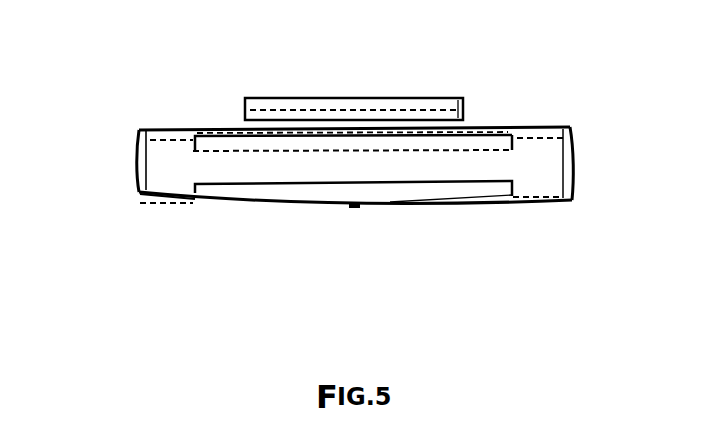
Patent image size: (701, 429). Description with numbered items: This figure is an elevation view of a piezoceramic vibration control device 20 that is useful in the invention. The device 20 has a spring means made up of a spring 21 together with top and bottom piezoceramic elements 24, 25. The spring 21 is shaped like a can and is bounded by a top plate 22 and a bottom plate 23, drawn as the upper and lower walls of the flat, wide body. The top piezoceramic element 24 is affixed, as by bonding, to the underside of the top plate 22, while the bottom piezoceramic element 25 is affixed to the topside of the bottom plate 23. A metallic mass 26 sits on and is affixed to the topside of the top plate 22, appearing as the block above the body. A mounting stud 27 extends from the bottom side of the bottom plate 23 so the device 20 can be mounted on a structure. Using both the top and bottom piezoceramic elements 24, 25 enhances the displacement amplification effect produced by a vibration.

The piezoceramic vibration control device 20 is at (556, 95).
The spring 21 is at (140, 164).
The top plate 22 is at (162, 123).
The bottom plate 23 is at (168, 204).
The top piezoceramic element 24 is at (488, 120).
The bottom piezoceramic element 25 is at (508, 206).
The metallic mass 26 is at (267, 105).
The mounting stud 27 is at (350, 211).